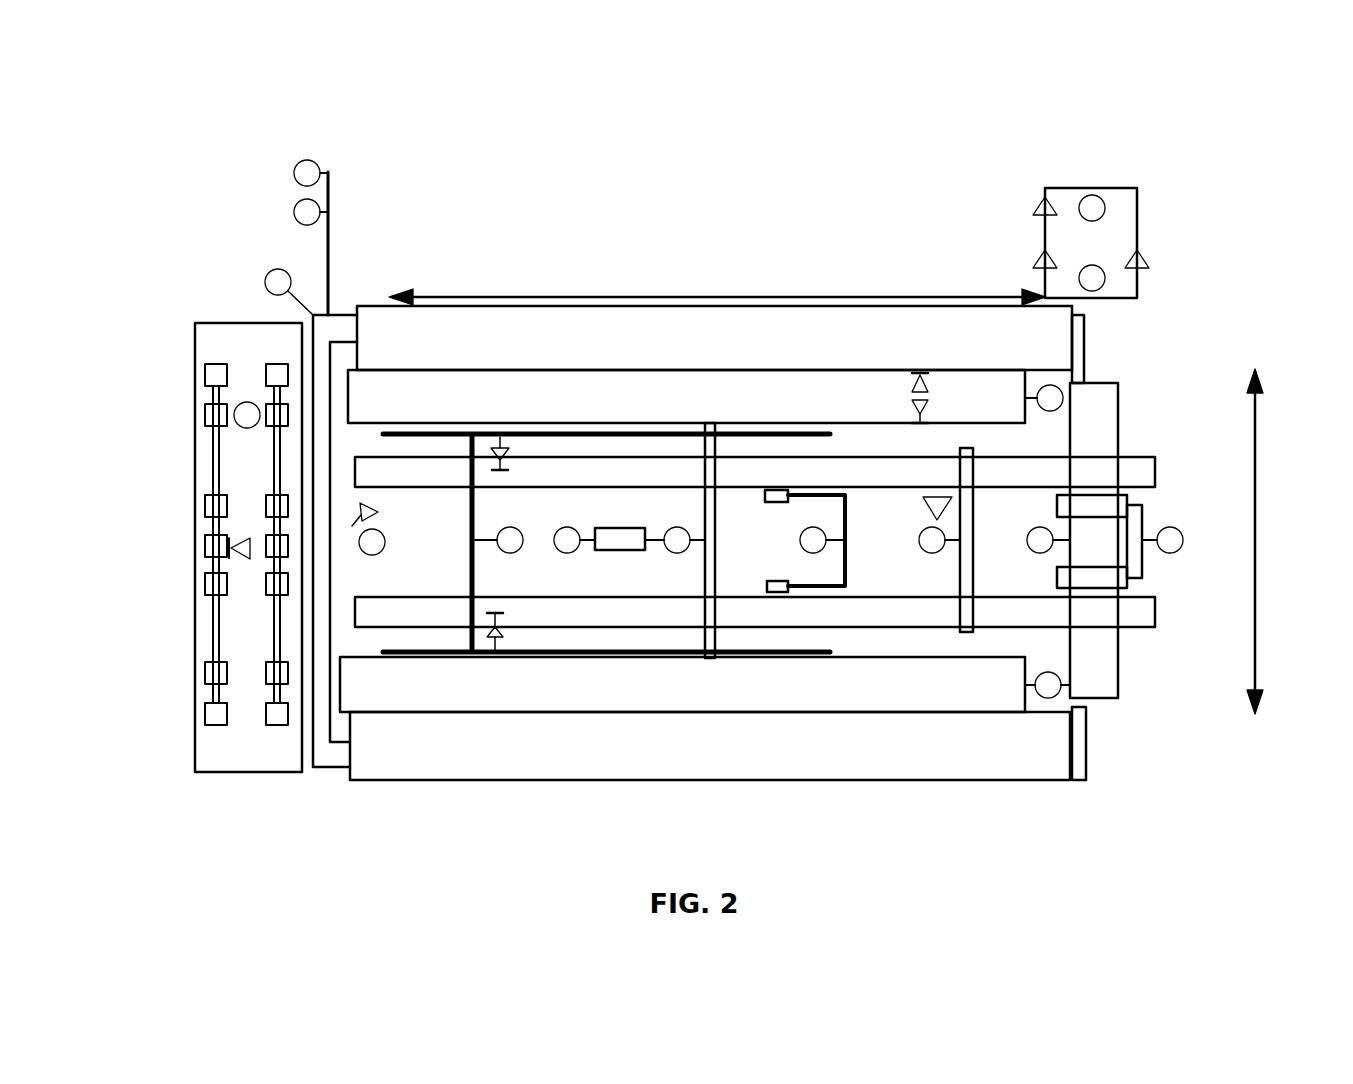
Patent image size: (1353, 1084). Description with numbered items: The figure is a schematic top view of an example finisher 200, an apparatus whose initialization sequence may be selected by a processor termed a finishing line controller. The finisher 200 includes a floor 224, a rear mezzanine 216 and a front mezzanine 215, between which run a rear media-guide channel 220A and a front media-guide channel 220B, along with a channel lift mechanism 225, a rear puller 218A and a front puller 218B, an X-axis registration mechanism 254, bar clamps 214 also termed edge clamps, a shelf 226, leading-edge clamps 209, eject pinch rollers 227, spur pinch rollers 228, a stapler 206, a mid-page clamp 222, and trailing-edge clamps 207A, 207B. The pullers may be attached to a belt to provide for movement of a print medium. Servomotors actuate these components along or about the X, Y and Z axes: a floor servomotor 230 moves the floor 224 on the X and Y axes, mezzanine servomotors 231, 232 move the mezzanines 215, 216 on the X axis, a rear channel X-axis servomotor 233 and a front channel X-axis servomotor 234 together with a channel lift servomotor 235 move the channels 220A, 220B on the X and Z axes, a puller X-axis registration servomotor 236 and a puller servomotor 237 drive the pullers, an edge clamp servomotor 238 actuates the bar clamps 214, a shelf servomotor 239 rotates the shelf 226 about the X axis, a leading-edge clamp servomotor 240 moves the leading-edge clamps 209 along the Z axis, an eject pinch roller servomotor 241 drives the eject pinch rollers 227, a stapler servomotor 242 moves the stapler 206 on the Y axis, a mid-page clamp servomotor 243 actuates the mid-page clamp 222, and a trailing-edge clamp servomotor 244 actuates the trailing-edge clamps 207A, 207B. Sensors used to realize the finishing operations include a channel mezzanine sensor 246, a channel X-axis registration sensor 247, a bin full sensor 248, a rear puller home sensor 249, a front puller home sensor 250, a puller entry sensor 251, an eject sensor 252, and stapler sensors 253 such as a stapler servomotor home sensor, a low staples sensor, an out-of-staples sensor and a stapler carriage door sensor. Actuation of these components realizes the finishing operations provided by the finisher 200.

The finisher 200 is at (448, 172).
The stapler 206 is at (1068, 253).
The trailing-edge clamp 207A is at (846, 440).
The trailing-edge clamp 207B is at (856, 610).
The leading-edge clamps 209 is at (1130, 495).
The bar clamps 214 is at (543, 432).
The front mezzanine 215 is at (738, 755).
The rear mezzanine 216 is at (738, 353).
The rear puller 218A is at (848, 470).
The front puller 218B is at (858, 612).
The rear media-guide channel 220A is at (748, 412).
The front media-guide channel 220B is at (748, 698).
The mid-page clamp 222 is at (600, 552).
The floor 224 is at (321, 770).
The channel lift mechanism 225 is at (703, 470).
The shelf 226 is at (1093, 555).
The eject pinch rollers 227 is at (277, 726).
The spur pinch rollers 228 is at (216, 726).
The floor servomotor 230 is at (265, 282).
The mezzanine servomotor 231 is at (294, 173).
The mezzanine servomotor 232 is at (294, 212).
The rear channel X-axis servomotor 233 is at (1062, 386).
The front channel X-axis servomotor 234 is at (1062, 688).
The channel lift servomotor 235 is at (672, 555).
The puller X-axis registration servomotor 236 is at (932, 555).
The puller servomotor 237 is at (373, 556).
The edge clamp servomotor 238 is at (459, 570).
The shelf servomotor 239 is at (1040, 526).
The leading-edge clamp servomotor 240 is at (1185, 540).
The eject pinch roller servomotor 241 is at (247, 402).
The stapler servomotor 242 is at (1096, 195).
The mid-page clamp servomotor 243 is at (567, 526).
The trailing-edge clamp servomotor 244 is at (776, 594).
The channel mezzanine sensor 246 is at (940, 373).
The channel X-axis registration sensor 247 is at (905, 410).
The bin full sensor 248 is at (932, 500).
The rear puller home sensor 249 is at (503, 445).
The front puller home sensor 250 is at (495, 640).
The puller entry sensor 251 is at (366, 502).
The eject sensor 252 is at (229, 553).
The stapler sensors 253 is at (1040, 205).
The X-axis registration mechanism 254 is at (965, 635).